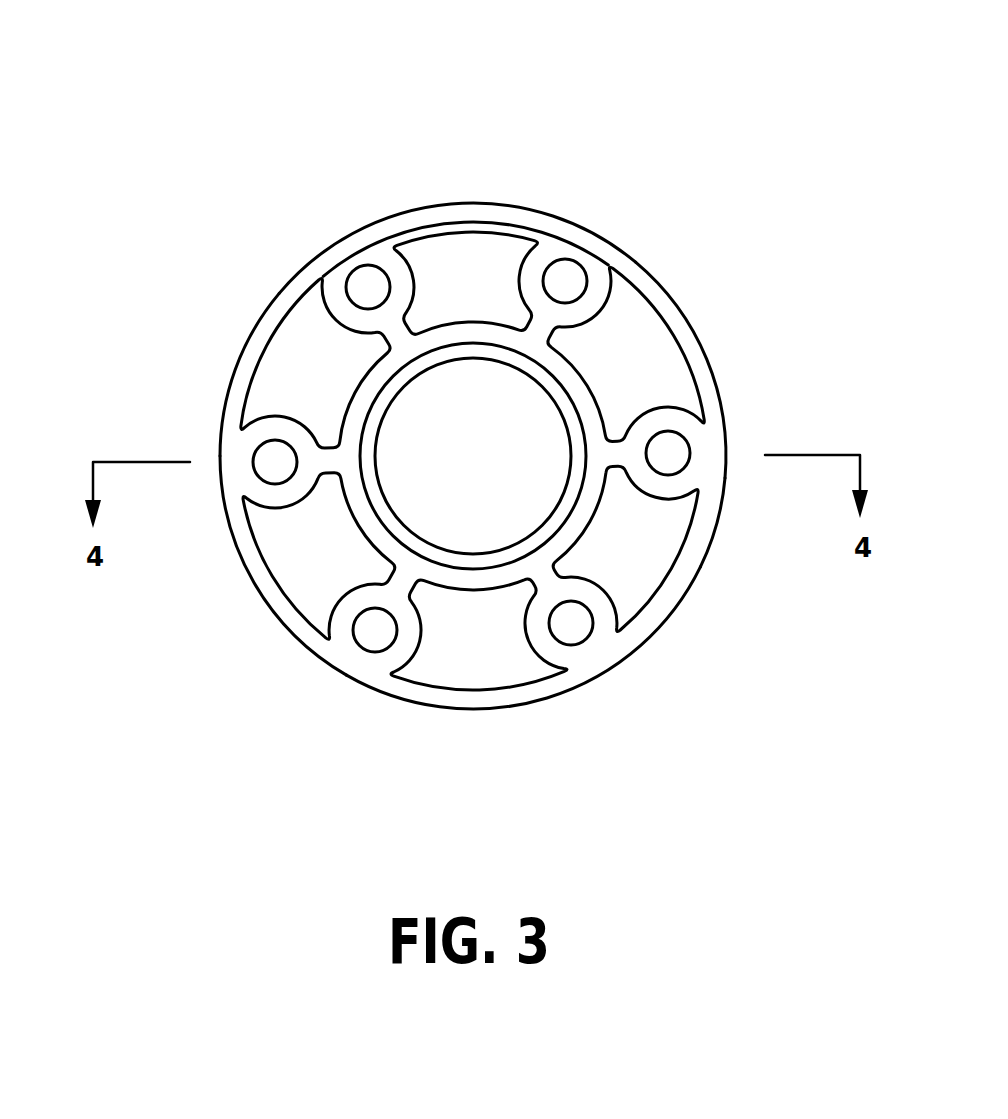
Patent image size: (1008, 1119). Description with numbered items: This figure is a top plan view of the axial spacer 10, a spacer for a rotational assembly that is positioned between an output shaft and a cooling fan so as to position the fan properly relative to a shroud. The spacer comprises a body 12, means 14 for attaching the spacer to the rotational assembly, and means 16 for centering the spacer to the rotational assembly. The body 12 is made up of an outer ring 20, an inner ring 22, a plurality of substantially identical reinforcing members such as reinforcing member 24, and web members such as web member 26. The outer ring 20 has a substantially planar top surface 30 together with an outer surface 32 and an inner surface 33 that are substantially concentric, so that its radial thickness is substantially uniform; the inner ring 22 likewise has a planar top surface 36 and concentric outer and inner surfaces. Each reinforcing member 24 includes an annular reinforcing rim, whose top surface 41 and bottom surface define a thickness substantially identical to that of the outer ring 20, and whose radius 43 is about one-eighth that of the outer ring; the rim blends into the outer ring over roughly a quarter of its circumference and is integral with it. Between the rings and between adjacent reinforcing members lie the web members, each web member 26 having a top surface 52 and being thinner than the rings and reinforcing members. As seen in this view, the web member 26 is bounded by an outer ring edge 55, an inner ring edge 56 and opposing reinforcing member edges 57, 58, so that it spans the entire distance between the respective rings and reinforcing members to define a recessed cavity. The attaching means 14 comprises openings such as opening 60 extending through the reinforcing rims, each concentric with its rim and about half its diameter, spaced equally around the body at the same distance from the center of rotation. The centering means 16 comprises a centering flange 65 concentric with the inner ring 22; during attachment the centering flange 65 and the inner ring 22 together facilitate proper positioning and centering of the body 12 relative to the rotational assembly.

The axial spacer 10 is at (478, 115).
The body 12 is at (680, 587).
The means for attaching the spacer to a rotational assembly 14 is at (574, 272).
The means for centering the spacer to a rotational assembly 16 is at (553, 392).
The outer ring 20 is at (260, 330).
The inner ring 22 is at (357, 402).
The reinforcing member 24 is at (336, 283).
The web member 26 is at (283, 556).
The top surface 30 is at (702, 373).
The outer surface 32 is at (357, 234).
The inner surface 33 is at (690, 538).
The top surface 36 is at (312, 623).
The top surface 41 is at (690, 435).
The radius 43 is at (603, 588).
The top surface 52 is at (462, 267).
The outer ring edge 55 is at (452, 222).
The inner ring edge 56 is at (443, 318).
The reinforcing member edge 57 is at (419, 626).
The reinforcing member edge 58 is at (518, 630).
The opening 60 is at (270, 468).
The centering flange 65 is at (540, 540).